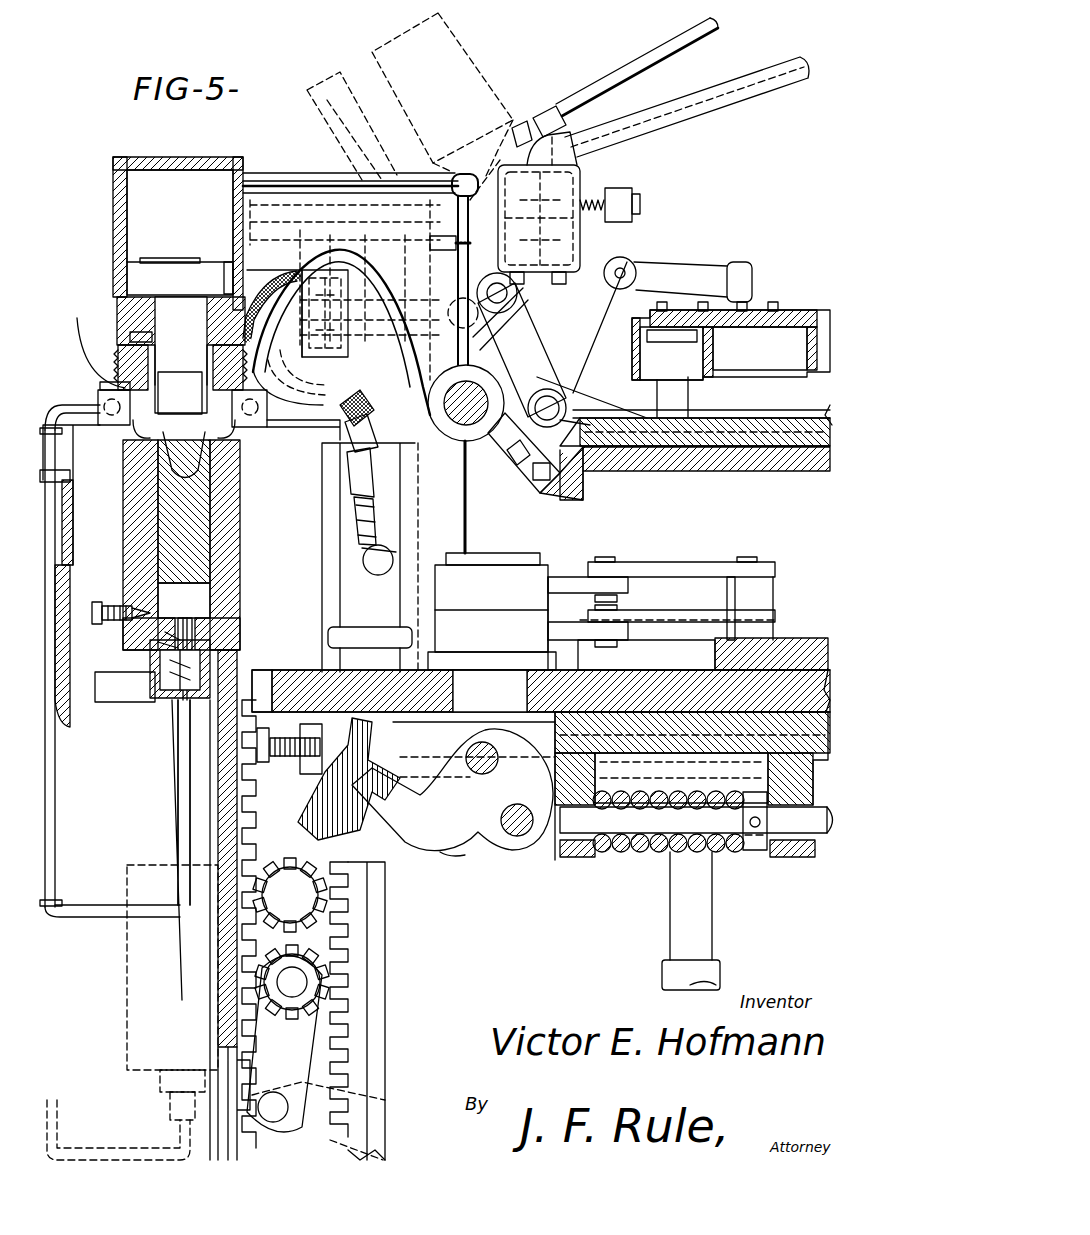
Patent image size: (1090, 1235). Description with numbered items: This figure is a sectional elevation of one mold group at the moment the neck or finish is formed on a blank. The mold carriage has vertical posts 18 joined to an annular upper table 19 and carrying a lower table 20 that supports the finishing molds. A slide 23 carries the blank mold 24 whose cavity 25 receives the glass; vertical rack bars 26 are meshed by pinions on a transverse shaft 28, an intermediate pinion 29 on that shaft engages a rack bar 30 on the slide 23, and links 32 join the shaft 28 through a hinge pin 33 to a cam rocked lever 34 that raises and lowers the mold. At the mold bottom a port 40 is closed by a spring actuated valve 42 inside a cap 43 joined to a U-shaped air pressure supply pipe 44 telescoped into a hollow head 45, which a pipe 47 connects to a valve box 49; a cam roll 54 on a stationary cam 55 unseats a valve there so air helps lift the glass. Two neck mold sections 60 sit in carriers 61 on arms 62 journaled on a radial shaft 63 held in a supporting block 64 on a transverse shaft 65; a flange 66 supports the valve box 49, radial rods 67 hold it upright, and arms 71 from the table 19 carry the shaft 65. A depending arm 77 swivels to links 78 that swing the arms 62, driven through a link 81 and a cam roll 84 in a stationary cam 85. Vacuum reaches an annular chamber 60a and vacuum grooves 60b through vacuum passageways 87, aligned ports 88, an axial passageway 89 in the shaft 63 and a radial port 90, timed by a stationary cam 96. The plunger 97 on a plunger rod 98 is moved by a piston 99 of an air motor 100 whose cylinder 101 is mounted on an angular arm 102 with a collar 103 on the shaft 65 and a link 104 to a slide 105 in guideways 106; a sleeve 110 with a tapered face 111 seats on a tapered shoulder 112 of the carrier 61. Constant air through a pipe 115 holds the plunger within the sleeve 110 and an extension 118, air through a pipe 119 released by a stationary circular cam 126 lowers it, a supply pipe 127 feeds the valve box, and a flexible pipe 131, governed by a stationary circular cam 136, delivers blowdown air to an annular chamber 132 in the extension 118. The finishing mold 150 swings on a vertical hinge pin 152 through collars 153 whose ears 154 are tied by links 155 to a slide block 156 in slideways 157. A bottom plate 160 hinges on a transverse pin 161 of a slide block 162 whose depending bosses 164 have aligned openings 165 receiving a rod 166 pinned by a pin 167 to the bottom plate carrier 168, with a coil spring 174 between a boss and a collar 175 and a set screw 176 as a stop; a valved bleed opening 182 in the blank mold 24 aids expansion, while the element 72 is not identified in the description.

The vertical posts 18 is at (670, 925).
The annular table 19 is at (718, 473).
The table 20 is at (648, 685).
The slide 23 is at (218, 995).
The blank mold 24 is at (240, 526).
The cavity 25 is at (210, 598).
The rack bars 26 is at (370, 1040).
The transverse shaft 28 is at (308, 982).
The intermediate pinion 29 is at (330, 1005).
The rack bar 30 is at (256, 800).
The links 32 is at (300, 1062).
The hinge pin 33 is at (268, 1115).
The lever 34 is at (340, 1098).
The port 40 is at (192, 628).
The spring actuated valve 42 is at (165, 635).
The cap 43 is at (160, 682).
The air pressure supply pipe 44 is at (180, 760).
The hollow head 45 is at (92, 615).
The pipe 47 is at (445, 235).
The valve box 49 is at (580, 178).
The cam roll 54 is at (748, 276).
The stationary cam 55 is at (745, 302).
The neck mold sections 60 is at (240, 430).
The annular chamber 60a is at (180, 393).
The vacuum grooves 60b is at (170, 468).
The carriers 61 is at (110, 425).
The arms 62 is at (305, 385).
The radial shaft 63 is at (252, 340).
The supporting block 64 is at (372, 408).
The transverse shaft 65 is at (455, 441).
The flange 66 is at (548, 276).
The radial rods 67 is at (688, 38).
The arms 71 is at (540, 478).
The arc guide 72 is at (77, 325).
The depending arm 77 is at (466, 518).
The links 78 is at (349, 493).
The link 81 is at (560, 370).
The cam roll 84 is at (688, 378).
The stationary cam 85 is at (632, 372).
The vacuum passageways 87 is at (285, 428).
The aligned ports 88 is at (348, 394).
The axial passageway 89 is at (346, 304).
The radial port 90 is at (415, 280).
The stationary cam 96 is at (775, 302).
The plunger 97 is at (123, 496).
The plunger rod 98 is at (135, 312).
The piston 99 is at (172, 250).
The air motor 100 is at (480, 80).
The cylinder 101 is at (200, 160).
The angular arm 102 is at (285, 168).
The collar 103 is at (525, 377).
The link 104 is at (540, 347).
The slide 105 is at (665, 446).
The guideways 106 is at (735, 418).
The sleeve 110 is at (118, 360).
The tapered face 111 is at (130, 380).
The tapered shoulder 112 is at (100, 386).
The air pressure supply pipe 115 is at (265, 232).
The extension 118 is at (135, 333).
The air pressure supply pipe 119 is at (320, 156).
The stationary circular cam 126 is at (700, 300).
The air pressure supply pipe 127 is at (690, 110).
The flexible pipe 131 is at (226, 272).
The annular chamber 132 is at (207, 360).
The stationary circular cam 136 is at (662, 303).
The finishing mold 150 is at (322, 562).
The vertical hinge pin 152 is at (508, 560).
The collars 153 is at (450, 620).
The ears 154 is at (575, 577).
The links 155 is at (712, 572).
The slide block 156 is at (822, 615).
The slideways 157 is at (560, 662).
The bottom plate 160 is at (312, 818).
The transverse pin 161 is at (466, 755).
The slide block 162 is at (555, 712).
The depending bosses 164 is at (575, 857).
The aligned openings 165 is at (560, 840).
The rod 166 is at (642, 850).
The pin 167 is at (505, 832).
The bottom plate carrier 168 is at (432, 844).
The coil spring 174 is at (650, 852).
The collar 175 is at (752, 850).
The set screw 176 is at (262, 728).
The valved bleed opening 182 is at (130, 608).